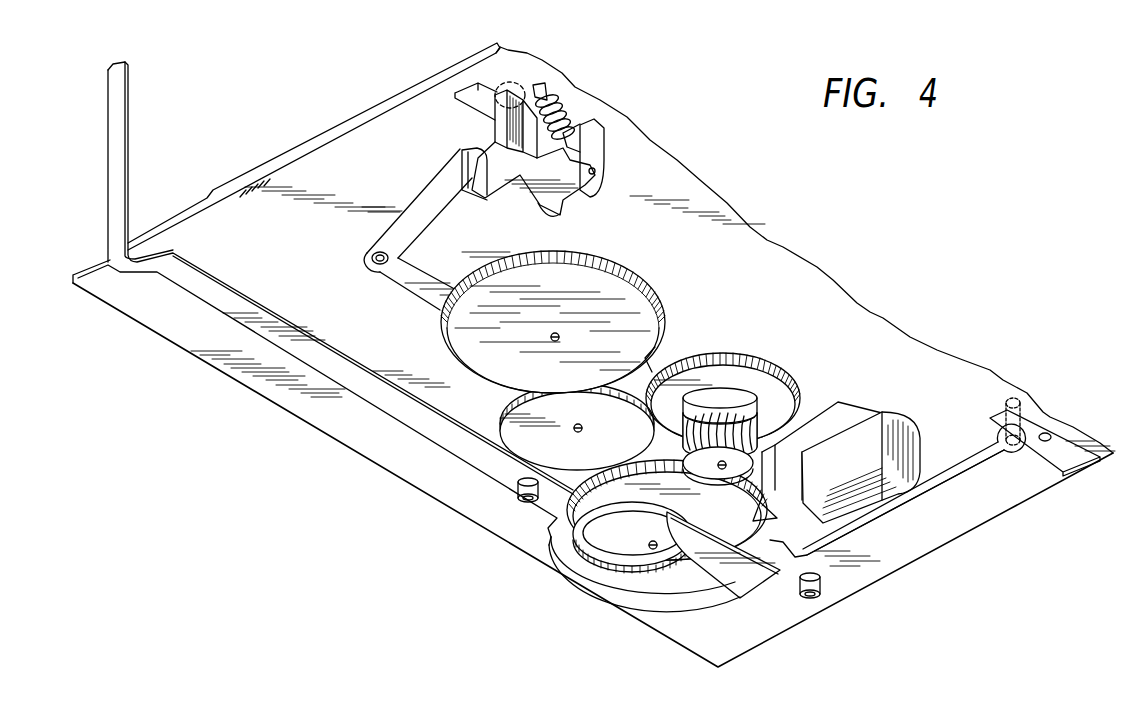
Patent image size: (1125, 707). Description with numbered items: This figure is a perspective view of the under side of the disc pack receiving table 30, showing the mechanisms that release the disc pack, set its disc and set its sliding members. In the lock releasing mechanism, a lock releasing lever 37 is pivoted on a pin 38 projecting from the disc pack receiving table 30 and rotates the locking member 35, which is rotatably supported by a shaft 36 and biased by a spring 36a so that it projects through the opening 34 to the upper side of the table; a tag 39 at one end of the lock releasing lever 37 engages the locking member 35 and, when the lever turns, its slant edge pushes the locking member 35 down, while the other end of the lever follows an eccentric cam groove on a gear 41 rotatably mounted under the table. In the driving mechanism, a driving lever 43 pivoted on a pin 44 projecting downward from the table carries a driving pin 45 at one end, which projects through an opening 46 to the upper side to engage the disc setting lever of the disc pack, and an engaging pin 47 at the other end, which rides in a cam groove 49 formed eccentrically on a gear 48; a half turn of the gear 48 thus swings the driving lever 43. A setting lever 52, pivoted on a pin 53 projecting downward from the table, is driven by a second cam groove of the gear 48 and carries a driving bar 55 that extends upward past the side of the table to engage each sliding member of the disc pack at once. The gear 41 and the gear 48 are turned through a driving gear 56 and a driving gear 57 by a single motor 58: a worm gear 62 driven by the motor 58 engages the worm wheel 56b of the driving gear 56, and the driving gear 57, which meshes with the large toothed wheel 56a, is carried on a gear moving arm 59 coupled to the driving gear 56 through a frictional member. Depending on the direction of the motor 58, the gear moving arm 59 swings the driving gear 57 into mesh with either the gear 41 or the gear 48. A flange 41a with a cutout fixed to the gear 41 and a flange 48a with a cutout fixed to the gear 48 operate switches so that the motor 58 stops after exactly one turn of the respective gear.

The disc pack receiving table 30 is at (315, 130).
The opening 34 is at (468, 90).
The locking member 35 is at (498, 120).
The shaft 36 is at (596, 170).
The spring 36a is at (565, 118).
The lock releasing lever 37 is at (413, 222).
The pin 38 is at (378, 266).
The tag 39 is at (470, 173).
The gear 41 is at (600, 258).
The flange with a cutout 41a is at (668, 308).
The driving lever 43 is at (882, 537).
The pin 44 is at (806, 598).
The driving pin 45 is at (1000, 427).
The opening 46 is at (1050, 436).
The engaging pin 47 is at (672, 516).
The gear 48 is at (640, 465).
The flange with a cutout 48a is at (566, 547).
The cam groove 49 is at (662, 558).
The setting lever 52 is at (233, 297).
The pin 53 is at (526, 501).
The driving bar 55 is at (117, 143).
The driving gear 56 is at (760, 385).
The large toothed wheel 56a is at (750, 357).
The worm wheel 56b is at (762, 420).
The driving gear 57 is at (497, 410).
The motor 58 is at (897, 435).
The gear moving arm 59 is at (652, 378).
The worm gear 62 is at (765, 510).